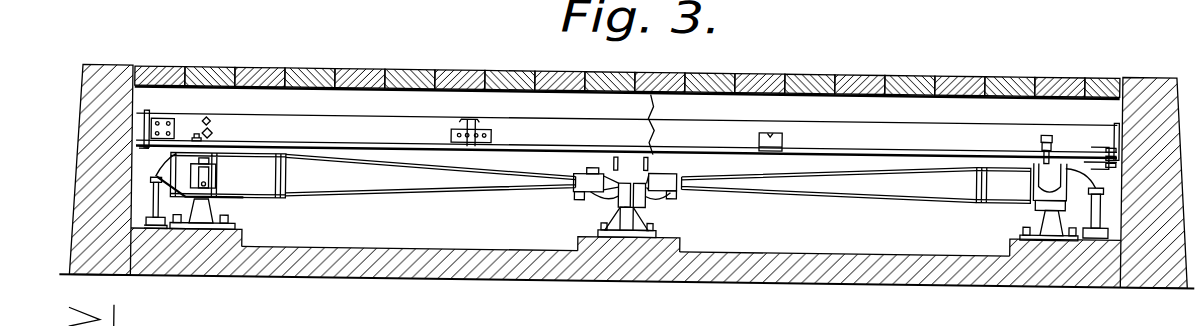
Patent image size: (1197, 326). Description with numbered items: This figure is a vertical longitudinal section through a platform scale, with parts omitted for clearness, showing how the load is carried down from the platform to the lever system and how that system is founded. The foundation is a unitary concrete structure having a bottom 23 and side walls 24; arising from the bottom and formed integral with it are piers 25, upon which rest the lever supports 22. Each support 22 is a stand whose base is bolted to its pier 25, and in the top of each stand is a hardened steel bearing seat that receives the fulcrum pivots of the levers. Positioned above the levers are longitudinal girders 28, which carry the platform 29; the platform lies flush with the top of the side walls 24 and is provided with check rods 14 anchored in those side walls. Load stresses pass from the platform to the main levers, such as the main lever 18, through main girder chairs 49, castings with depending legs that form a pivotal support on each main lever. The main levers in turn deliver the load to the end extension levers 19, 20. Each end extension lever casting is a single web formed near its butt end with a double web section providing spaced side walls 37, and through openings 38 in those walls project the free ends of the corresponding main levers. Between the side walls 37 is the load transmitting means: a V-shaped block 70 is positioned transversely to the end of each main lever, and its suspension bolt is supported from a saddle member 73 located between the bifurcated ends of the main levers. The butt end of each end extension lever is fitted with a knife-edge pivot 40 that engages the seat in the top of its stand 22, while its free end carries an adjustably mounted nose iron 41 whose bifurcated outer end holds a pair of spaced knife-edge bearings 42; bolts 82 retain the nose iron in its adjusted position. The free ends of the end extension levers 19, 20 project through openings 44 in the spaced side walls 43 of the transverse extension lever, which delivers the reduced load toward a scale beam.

The check rods 14 is at (1068, 138).
The main lever 18 is at (1040, 171).
The end extension lever 19 is at (373, 177).
The end extension lever 20 is at (855, 183).
The lever support 22 is at (212, 204).
The bottom 23 is at (370, 245).
The side walls 24 is at (84, 90).
The piers 25 is at (243, 229).
The longitudinal girders 28 is at (628, 122).
The platform 29 is at (373, 64).
The side walls 37 is at (203, 157).
The openings 38 is at (218, 172).
The knife-edge pivot 40 is at (155, 176).
The nose iron 41 is at (602, 167).
The knife-edge bearings 42 is at (647, 186).
The side walls 43 is at (645, 159).
The openings 44 is at (620, 186).
The main girder chairs 49 is at (195, 139).
The block 70 is at (641, 201).
The saddle member 73 is at (646, 175).
The bolts 82 is at (592, 162).